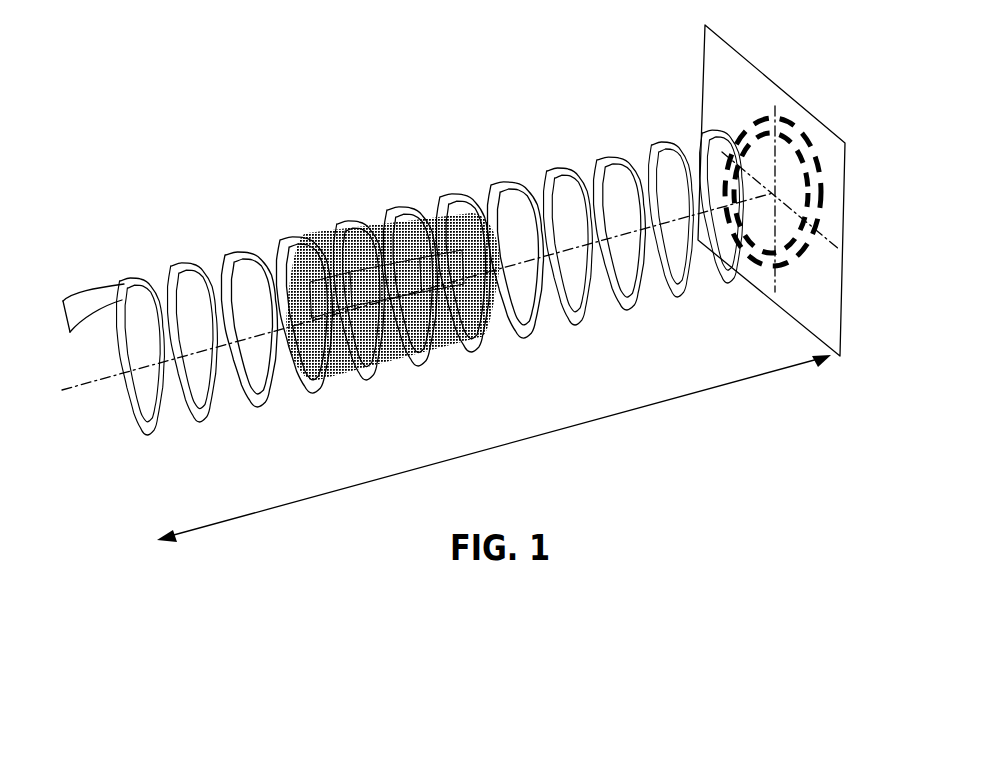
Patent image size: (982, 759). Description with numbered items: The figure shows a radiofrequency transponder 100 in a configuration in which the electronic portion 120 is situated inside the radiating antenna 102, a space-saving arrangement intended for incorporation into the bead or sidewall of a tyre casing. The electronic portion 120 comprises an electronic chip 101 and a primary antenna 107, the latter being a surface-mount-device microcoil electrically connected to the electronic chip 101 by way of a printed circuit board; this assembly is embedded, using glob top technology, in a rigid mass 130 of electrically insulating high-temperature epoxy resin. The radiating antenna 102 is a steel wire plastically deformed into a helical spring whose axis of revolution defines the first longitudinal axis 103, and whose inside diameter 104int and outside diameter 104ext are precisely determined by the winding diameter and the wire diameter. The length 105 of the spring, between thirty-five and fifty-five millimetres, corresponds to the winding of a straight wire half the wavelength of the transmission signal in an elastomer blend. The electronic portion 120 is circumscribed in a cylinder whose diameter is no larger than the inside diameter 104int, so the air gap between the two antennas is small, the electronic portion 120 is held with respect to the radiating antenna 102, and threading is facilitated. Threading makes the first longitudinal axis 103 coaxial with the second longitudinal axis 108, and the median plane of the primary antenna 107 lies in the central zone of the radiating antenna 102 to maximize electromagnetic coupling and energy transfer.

The radiofrequency transponder 100 is at (383, 148).
The electronic chip 101 is at (328, 283).
The radiating antenna 102 is at (617, 150).
The first longitudinal axis 103 is at (223, 347).
The inside diameter 104int is at (738, 131).
The outside diameter 104ext is at (772, 100).
The length 105 is at (700, 405).
The primary antenna 107 is at (428, 257).
The second longitudinal axis 108 is at (503, 195).
The electronic portion 120 is at (436, 372).
The rigid mass 130 is at (438, 337).